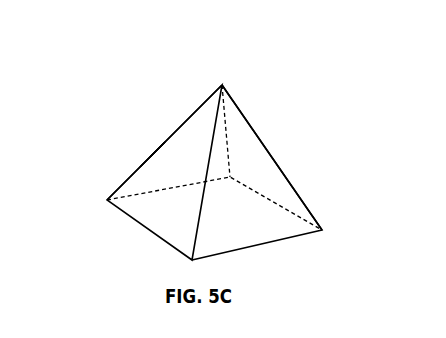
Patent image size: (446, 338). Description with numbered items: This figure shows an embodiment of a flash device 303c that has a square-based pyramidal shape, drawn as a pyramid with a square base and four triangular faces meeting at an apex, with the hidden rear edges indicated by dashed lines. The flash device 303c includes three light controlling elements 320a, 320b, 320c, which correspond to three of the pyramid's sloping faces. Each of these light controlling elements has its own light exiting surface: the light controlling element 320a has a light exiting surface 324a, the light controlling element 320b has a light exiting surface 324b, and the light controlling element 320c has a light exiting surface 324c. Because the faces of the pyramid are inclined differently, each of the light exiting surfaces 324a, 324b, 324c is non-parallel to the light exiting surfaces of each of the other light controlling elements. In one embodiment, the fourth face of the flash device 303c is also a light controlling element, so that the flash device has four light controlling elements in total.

The flash device 303c is at (262, 86).
The light controlling element 320a is at (242, 145).
The light controlling element 320b is at (166, 159).
The light controlling element 320c is at (178, 104).
The light exiting surface 324a is at (262, 177).
The light exiting surface 324b is at (152, 193).
The light exiting surface 324c is at (162, 133).